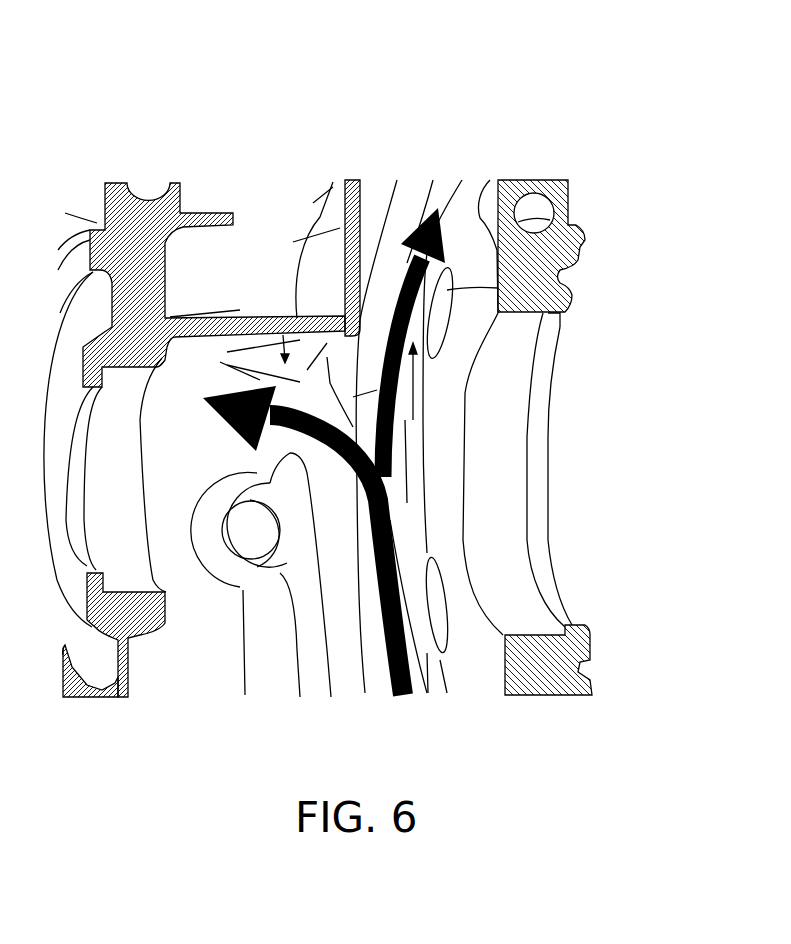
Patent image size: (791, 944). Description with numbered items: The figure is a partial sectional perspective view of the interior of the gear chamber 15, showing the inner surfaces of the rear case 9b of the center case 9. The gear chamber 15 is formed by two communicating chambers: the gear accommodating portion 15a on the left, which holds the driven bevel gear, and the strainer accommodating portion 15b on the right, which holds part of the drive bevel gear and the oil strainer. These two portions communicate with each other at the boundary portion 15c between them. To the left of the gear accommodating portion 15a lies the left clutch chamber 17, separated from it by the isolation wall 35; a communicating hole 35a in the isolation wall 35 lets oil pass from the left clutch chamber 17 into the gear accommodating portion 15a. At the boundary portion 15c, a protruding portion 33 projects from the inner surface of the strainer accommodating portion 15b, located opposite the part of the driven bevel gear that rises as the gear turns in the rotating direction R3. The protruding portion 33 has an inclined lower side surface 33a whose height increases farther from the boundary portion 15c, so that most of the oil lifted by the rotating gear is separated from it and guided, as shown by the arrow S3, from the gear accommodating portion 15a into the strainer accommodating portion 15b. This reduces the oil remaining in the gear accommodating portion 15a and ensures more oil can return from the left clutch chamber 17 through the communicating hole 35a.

The center case 9 is at (194, 393).
The rear case 9b is at (172, 184).
The protruding portion 33 is at (297, 318).
The lower side surface 33a is at (238, 318).
The gear chamber 15 is at (496, 353).
The gear accommodating portion 15a is at (415, 185).
The strainer accommodating portion 15b is at (335, 190).
The boundary portion 15c is at (350, 395).
The isolation wall 35 is at (487, 180).
The communicating hole 35a is at (560, 304).
The left clutch chamber 17 is at (600, 217).
The rotating direction R3 is at (410, 423).
The arrow S3 is at (397, 530).